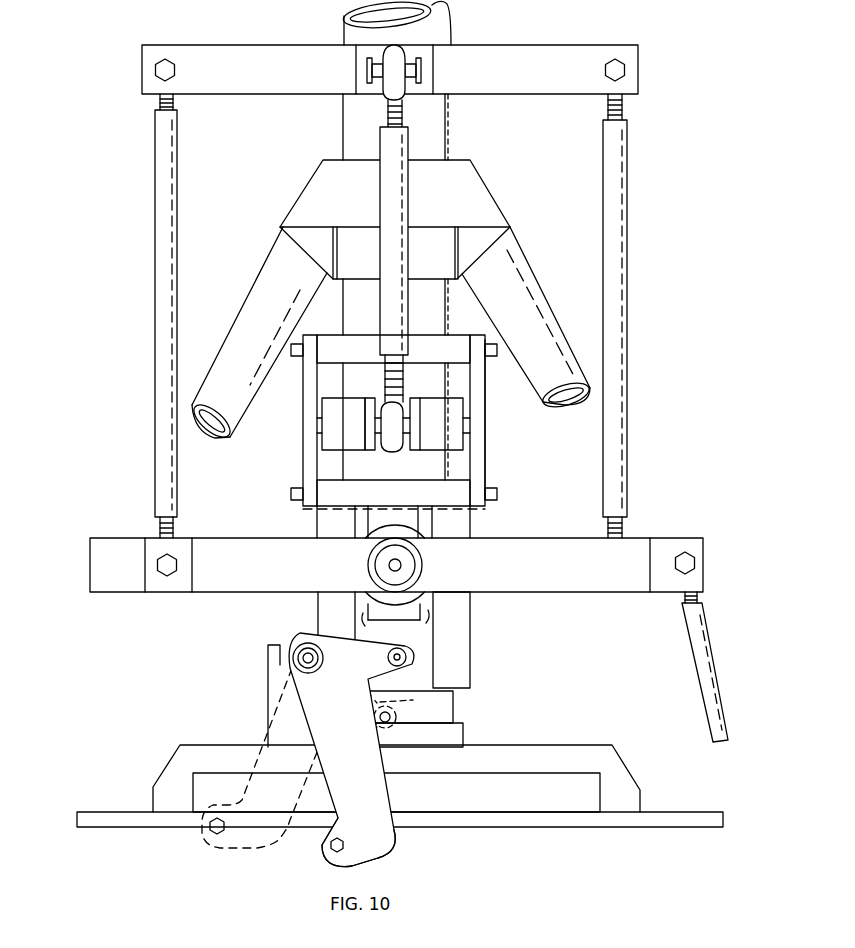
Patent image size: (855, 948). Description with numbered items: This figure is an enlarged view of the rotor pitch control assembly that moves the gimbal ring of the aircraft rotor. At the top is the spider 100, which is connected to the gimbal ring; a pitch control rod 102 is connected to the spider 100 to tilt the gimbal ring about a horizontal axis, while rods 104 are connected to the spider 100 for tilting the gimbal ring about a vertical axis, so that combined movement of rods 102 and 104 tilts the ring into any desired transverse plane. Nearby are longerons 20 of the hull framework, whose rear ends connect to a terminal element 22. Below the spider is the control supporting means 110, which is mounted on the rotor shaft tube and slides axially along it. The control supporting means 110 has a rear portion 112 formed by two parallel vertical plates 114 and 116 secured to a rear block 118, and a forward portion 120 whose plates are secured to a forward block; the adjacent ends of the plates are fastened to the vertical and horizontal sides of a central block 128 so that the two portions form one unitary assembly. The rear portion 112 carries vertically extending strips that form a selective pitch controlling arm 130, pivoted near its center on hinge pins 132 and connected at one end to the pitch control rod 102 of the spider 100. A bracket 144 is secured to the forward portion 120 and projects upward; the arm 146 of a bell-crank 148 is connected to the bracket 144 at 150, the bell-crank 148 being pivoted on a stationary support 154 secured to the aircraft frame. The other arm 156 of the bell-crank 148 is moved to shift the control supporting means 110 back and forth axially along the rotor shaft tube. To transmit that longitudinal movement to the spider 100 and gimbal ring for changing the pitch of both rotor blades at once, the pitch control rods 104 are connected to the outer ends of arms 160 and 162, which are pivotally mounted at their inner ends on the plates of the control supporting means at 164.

The longerons 20 is at (260, 300).
The terminal element 22 is at (482, 204).
The spider 100 is at (532, 88).
The pitch control rod 102 is at (382, 190).
The rods 104 is at (155, 153).
The control supporting means 110 is at (420, 427).
The rear portion 112 is at (497, 416).
The vertical plate 114 is at (475, 382).
The vertical plate 116 is at (312, 468).
The rear block 118 is at (352, 349).
The forward portion 120 is at (486, 631).
The central block 128 is at (455, 503).
The selective pitch controlling arm 130 is at (415, 412).
The hinge pins 132 is at (406, 410).
The bracket 144 is at (368, 628).
The arm of bell-crank 146 is at (378, 742).
The bell-crank 148 is at (353, 742).
The connection 150 is at (306, 656).
The stationary support 154 is at (276, 652).
The other arm of bell-crank 156 is at (370, 832).
The arm 160 is at (396, 580).
The arm 162 is at (98, 588).
The pivotal mounting 164 is at (405, 568).